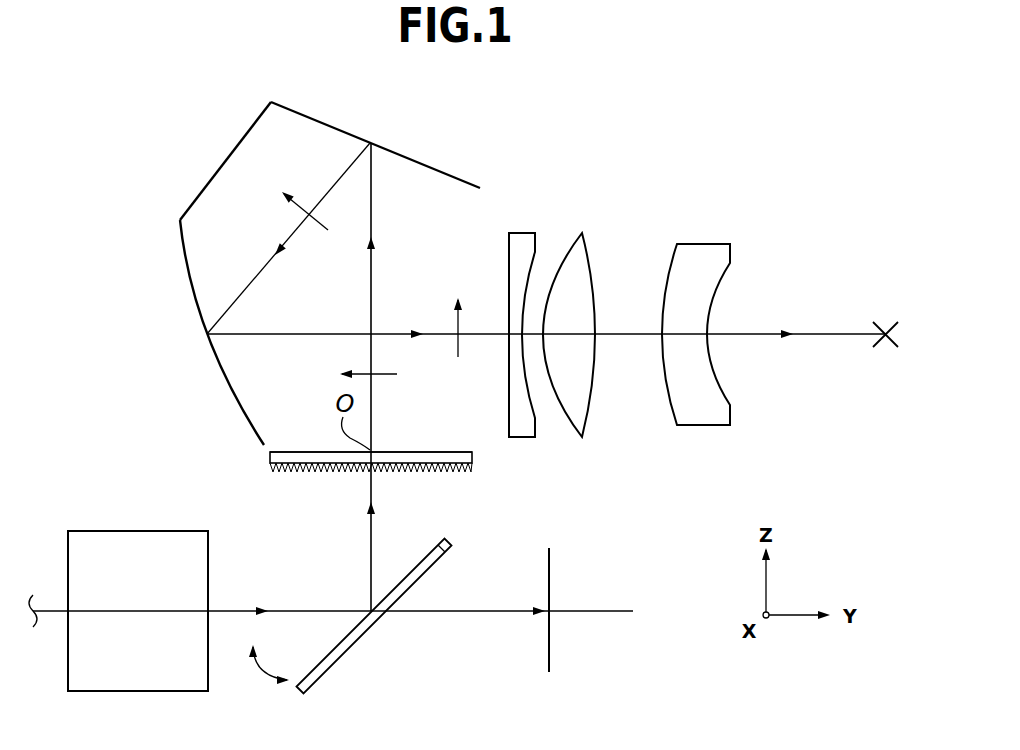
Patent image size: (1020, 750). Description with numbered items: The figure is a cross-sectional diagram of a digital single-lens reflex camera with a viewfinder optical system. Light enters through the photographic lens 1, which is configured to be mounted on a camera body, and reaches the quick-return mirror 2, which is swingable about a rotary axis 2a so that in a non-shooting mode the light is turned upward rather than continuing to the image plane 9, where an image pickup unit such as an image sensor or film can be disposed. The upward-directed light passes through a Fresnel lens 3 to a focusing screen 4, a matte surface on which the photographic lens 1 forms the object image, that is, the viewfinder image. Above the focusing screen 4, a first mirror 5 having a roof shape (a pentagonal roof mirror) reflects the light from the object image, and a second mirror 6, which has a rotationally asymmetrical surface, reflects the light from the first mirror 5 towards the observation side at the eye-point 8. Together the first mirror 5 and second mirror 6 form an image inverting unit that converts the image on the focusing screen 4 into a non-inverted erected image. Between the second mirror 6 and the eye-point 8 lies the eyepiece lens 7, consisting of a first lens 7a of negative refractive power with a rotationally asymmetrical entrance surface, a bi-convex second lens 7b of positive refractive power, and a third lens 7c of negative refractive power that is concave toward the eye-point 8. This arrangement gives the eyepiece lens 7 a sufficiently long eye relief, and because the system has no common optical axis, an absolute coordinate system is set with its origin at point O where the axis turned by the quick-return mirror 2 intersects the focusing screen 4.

The photographic lens 1 is at (132, 531).
The quick-return mirror 2 is at (325, 670).
The rotary axis 2a is at (455, 543).
The Fresnel lens 3 is at (421, 475).
The focusing screen 4 is at (428, 451).
The first mirror 5 is at (437, 170).
The second mirror 6 is at (218, 371).
The eyepiece lens 7 is at (616, 329).
The first lens 7a is at (522, 232).
The second lens 7b is at (582, 233).
The third lens 7c is at (707, 244).
The eye-point 8 is at (888, 350).
The image plane 9 is at (550, 658).